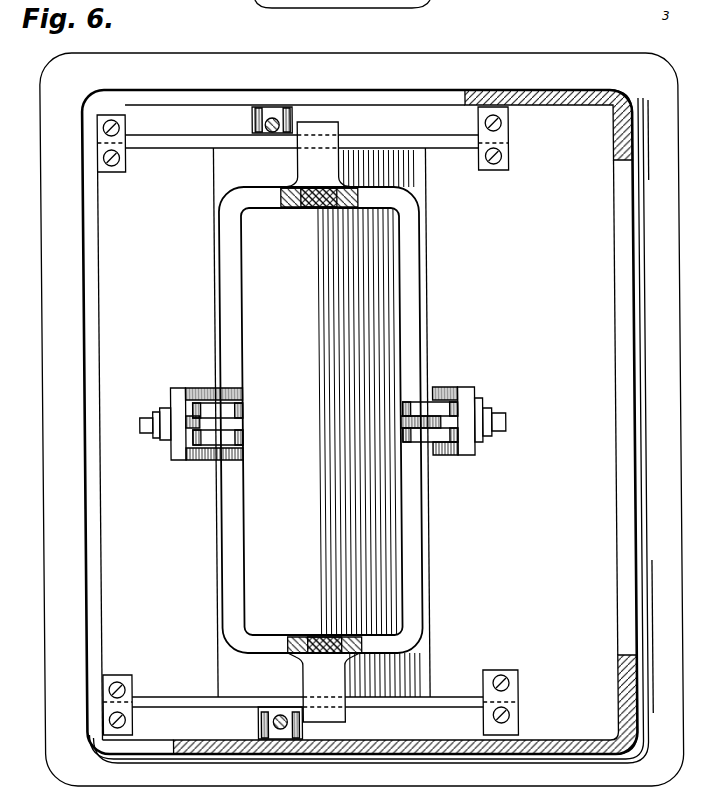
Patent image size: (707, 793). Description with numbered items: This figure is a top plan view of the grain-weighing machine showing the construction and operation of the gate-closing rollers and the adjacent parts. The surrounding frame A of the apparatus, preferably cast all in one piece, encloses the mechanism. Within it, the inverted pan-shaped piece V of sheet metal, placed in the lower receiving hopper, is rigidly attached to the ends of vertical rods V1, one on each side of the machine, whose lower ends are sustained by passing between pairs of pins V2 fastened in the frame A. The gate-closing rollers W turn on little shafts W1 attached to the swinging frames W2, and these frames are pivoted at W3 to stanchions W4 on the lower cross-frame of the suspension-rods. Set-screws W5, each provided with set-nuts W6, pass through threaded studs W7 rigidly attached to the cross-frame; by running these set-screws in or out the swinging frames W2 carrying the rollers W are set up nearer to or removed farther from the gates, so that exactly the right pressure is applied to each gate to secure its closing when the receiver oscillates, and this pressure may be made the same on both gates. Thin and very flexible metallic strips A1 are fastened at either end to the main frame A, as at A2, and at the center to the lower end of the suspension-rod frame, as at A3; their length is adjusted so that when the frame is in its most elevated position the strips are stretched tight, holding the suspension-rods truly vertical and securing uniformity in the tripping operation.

The frame A is at (368, 426).
The flexible metallic strips A1 is at (420, 135).
The end fastenings of strips A2 is at (508, 137).
The center fastening of strips A3 is at (321, 422).
The inverted pan-shaped piece V is at (320, 423).
The vertical rods V1 is at (263, 126).
The pins V2 is at (298, 116).
The gate-closing rollers W is at (250, 425).
The roller shafts W1 is at (238, 436).
The swinging frames W2 is at (177, 440).
The pivot W3 is at (187, 412).
The stanchions W4 is at (198, 390).
The set-screws W5 is at (140, 426).
The set-nuts W6 is at (154, 438).
The threaded studs W7 is at (477, 401).